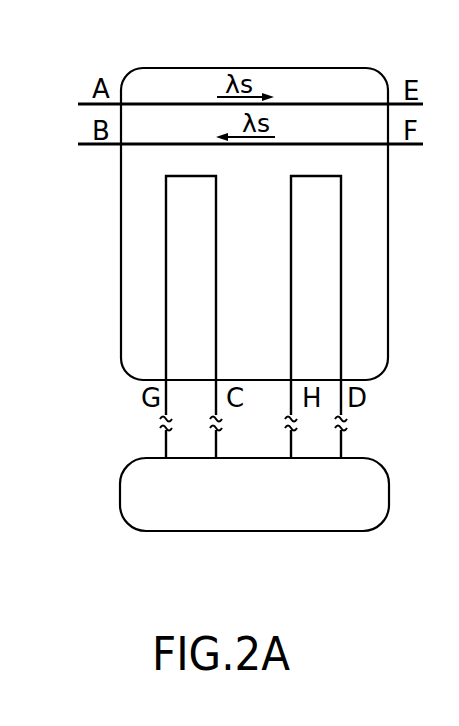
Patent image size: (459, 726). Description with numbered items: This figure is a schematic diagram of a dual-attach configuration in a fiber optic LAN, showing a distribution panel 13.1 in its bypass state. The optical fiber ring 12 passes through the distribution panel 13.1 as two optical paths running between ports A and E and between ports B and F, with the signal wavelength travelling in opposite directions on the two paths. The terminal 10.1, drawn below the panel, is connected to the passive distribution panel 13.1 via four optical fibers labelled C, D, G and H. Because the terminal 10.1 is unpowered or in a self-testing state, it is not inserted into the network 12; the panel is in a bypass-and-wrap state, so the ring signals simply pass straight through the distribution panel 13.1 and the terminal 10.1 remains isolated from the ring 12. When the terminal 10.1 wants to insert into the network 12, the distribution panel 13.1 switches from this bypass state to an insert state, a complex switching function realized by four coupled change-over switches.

The distribution panel 13.1 is at (326, 87).
The optical fiber ring 12 is at (72, 103).
The terminal 10.1 is at (250, 516).